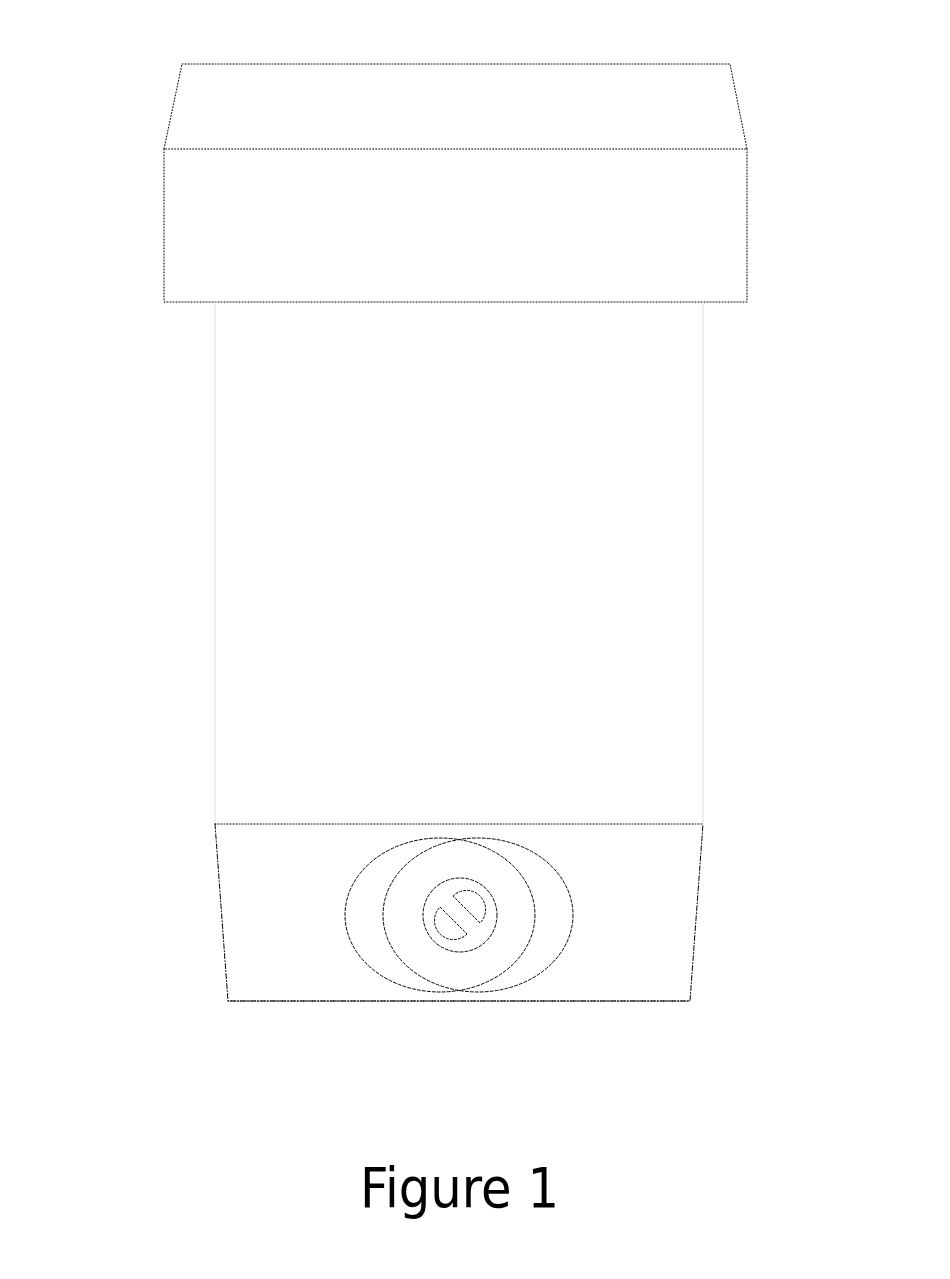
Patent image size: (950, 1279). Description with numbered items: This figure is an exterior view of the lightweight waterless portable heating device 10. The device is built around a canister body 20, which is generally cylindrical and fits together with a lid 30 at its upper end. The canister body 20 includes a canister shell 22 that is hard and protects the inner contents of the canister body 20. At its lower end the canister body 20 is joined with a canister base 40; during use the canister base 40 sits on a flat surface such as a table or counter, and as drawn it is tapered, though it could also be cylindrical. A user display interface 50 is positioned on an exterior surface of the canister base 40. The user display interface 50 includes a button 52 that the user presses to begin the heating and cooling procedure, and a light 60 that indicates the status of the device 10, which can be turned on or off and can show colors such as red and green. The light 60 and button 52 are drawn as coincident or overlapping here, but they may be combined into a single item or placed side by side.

The lightweight waterless portable heating device 10 is at (84, 60).
The canister body 20 is at (215, 528).
The canister shell 22 is at (240, 665).
The lid 30 is at (747, 226).
The canister base 40 is at (695, 915).
The user display interface 50 is at (352, 913).
The button 52 is at (405, 861).
The light 60 is at (465, 927).